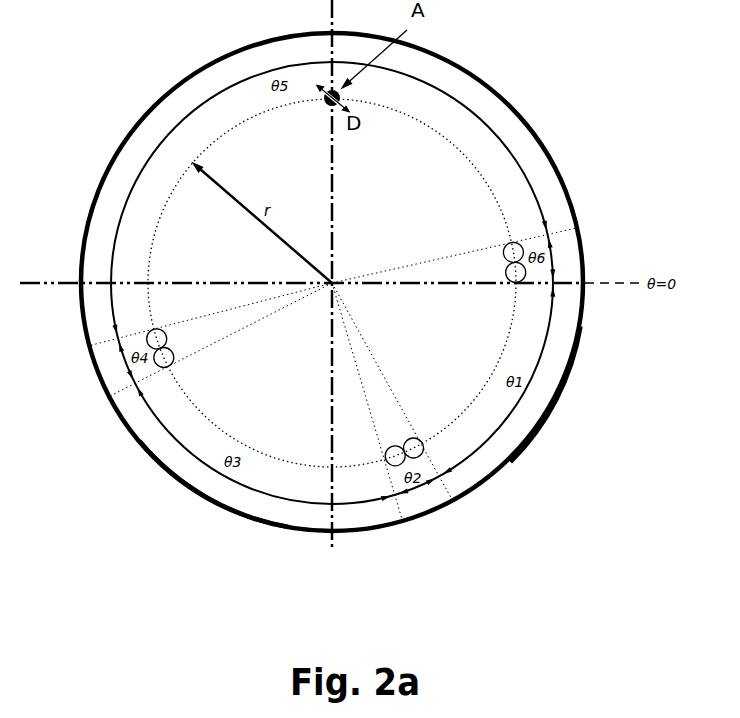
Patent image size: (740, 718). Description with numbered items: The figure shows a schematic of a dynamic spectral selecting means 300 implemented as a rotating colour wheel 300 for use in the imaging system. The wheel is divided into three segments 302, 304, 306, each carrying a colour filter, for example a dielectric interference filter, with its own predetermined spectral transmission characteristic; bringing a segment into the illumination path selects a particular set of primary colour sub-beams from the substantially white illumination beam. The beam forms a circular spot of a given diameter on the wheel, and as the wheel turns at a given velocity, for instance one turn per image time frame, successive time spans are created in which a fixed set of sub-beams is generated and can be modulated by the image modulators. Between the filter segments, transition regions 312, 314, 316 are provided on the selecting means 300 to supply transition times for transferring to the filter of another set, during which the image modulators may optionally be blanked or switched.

The dynamic spectral selecting means 300 is at (576, 65).
The segment 302 is at (557, 404).
The segment 304 is at (202, 501).
The segment 306 is at (157, 112).
The transition region 312 is at (436, 511).
The transition region 314 is at (97, 374).
The transition region 316 is at (578, 255).